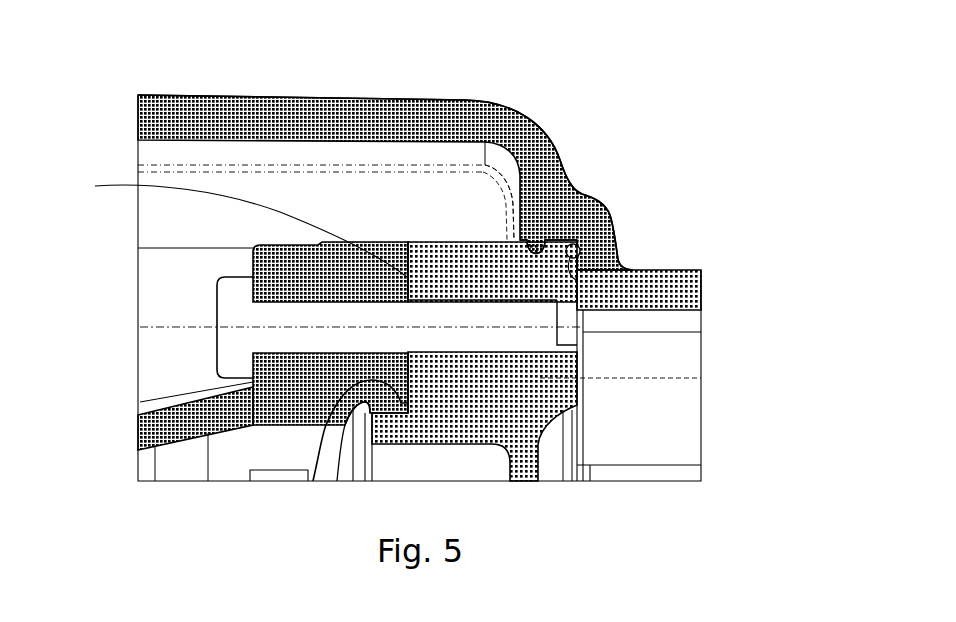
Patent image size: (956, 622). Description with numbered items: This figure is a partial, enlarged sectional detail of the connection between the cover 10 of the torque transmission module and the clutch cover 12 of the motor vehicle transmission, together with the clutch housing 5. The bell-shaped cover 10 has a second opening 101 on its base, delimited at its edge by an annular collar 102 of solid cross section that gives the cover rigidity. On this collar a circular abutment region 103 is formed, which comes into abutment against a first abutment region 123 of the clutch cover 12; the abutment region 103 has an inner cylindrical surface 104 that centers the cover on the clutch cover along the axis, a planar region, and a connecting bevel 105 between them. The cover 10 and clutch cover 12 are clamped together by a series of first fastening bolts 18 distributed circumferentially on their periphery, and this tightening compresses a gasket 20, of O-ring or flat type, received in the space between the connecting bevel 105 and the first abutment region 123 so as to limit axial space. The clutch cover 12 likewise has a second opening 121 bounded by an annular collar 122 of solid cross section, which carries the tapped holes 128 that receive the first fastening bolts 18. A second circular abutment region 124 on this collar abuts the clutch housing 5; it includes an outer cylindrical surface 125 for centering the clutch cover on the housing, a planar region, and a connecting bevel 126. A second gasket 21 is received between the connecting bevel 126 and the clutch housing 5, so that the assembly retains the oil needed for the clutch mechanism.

The clutch housing 5 is at (243, 118).
The cover 10 is at (178, 424).
The clutch cover 12 is at (527, 452).
The first fastening bolts 18 is at (217, 320).
The gasket 20 is at (409, 395).
The gasket 21 is at (578, 248).
The second opening 101 is at (308, 443).
The annular collar 102 is at (323, 240).
The circular abutment region 103 is at (130, 183).
The inner cylindrical surface 104 is at (341, 440).
The connecting bevel 105 is at (322, 432).
The second opening 121 is at (447, 455).
The annular collar 122 is at (460, 243).
The first abutment region 123 is at (407, 238).
The second circular abutment region 124 is at (511, 238).
The outer cylindrical surface 125 is at (527, 243).
The connecting bevel 126 is at (580, 288).
The tapped holes 128 is at (580, 346).